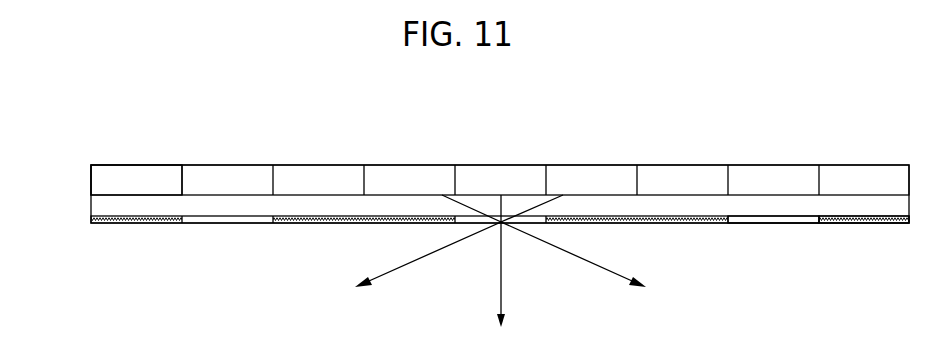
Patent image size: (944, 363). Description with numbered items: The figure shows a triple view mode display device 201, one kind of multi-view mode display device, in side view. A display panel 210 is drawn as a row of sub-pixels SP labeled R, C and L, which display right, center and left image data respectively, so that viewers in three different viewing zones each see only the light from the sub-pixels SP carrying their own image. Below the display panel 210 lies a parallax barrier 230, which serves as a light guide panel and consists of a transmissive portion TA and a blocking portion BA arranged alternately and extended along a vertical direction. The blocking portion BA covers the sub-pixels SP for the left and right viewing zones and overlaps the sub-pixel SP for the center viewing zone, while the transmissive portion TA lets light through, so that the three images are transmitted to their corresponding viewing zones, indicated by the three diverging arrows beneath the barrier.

The triple view mode display device 201 is at (750, 130).
The display panel 210 is at (91, 180).
The parallax barrier 230 is at (91, 218).
The sub-pixel SP is at (158, 172).
The transmissive portion TA is at (792, 221).
The blocking portion BA is at (840, 223).